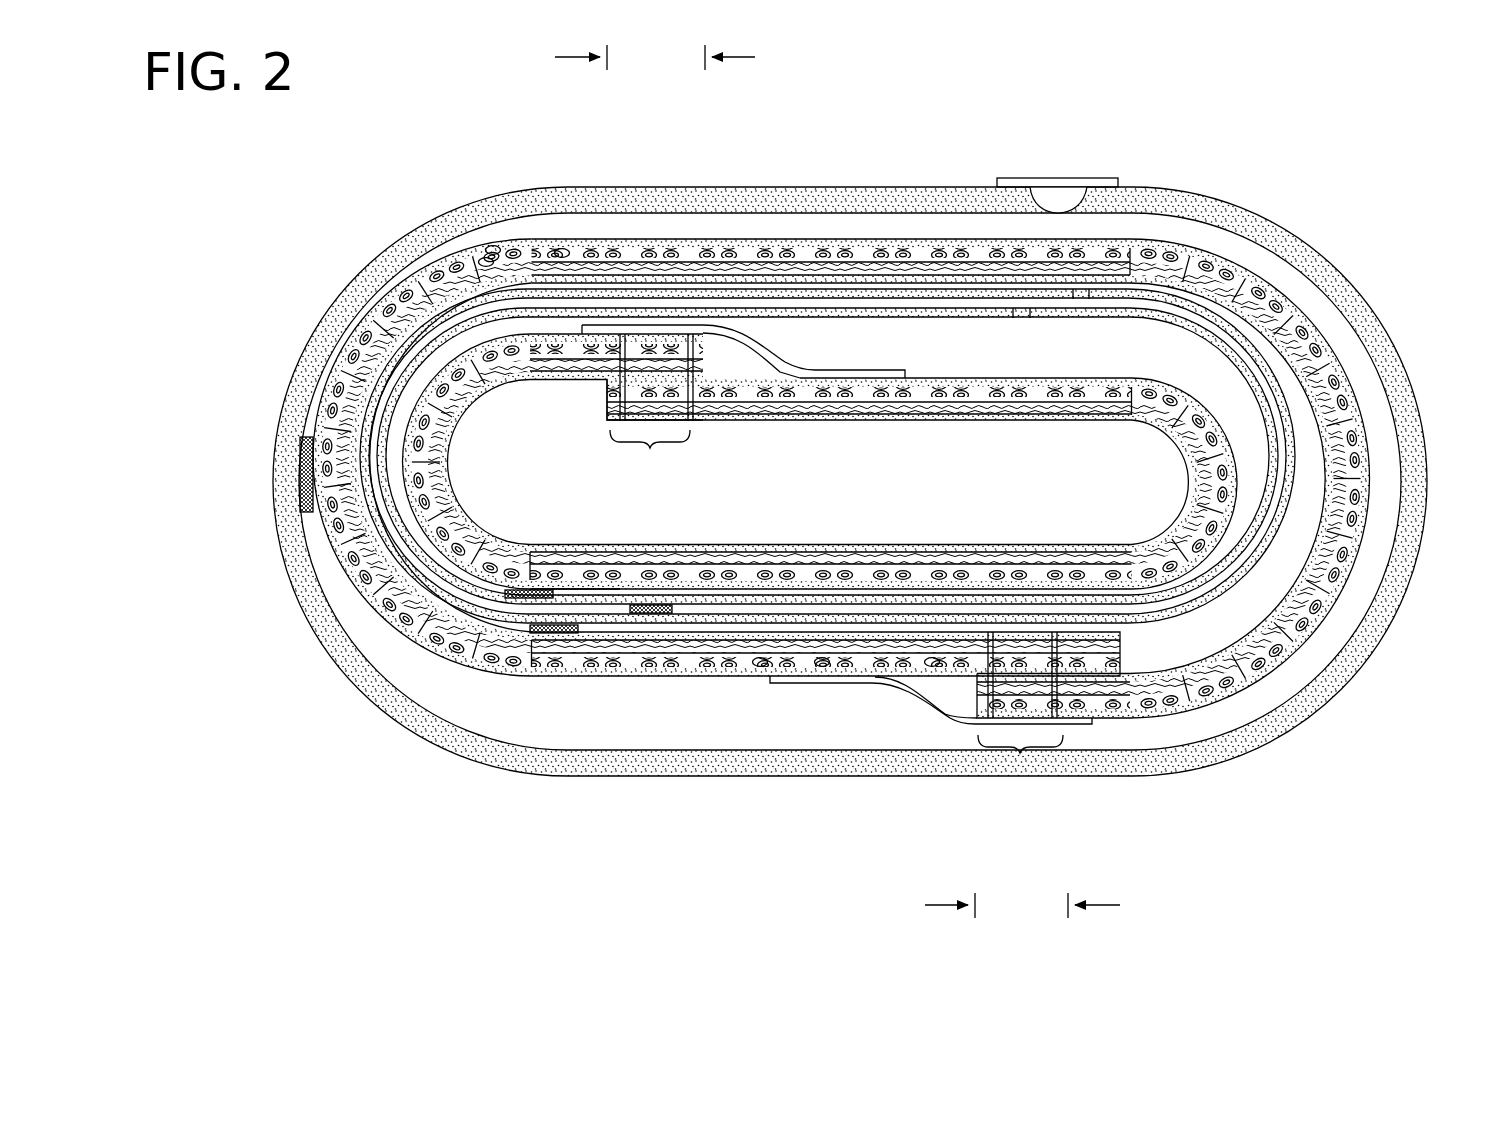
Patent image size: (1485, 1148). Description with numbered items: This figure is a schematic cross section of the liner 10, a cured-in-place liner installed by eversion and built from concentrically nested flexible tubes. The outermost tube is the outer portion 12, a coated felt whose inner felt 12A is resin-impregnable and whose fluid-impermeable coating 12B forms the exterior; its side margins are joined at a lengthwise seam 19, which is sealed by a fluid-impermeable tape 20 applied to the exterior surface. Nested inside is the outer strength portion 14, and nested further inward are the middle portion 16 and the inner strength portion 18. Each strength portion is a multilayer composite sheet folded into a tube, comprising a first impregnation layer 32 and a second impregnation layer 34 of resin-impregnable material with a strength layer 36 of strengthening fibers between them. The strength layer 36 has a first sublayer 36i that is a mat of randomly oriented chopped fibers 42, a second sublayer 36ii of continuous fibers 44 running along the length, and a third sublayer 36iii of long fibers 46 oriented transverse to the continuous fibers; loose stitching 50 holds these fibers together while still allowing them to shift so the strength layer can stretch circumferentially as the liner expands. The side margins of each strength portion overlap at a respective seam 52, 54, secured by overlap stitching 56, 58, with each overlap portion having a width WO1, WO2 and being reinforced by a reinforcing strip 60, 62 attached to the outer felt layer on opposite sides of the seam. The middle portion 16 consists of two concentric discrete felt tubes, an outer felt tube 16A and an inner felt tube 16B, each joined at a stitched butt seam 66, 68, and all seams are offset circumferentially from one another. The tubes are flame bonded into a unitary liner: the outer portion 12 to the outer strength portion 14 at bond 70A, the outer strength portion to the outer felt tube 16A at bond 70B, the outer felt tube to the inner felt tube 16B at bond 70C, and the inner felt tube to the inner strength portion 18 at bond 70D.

The liner 10 is at (375, 868).
The outer portion 12 is at (801, 506).
The felt 12A is at (785, 760).
The fluid-impermeable coating 12B is at (725, 776).
The outer strength portion 14 is at (826, 458).
The middle portion 16 is at (820, 365).
The outer felt tube 16A is at (618, 290).
The inner felt tube 16B is at (575, 598).
The inner strength portion 18 is at (756, 571).
The seam 19 is at (1075, 200).
The fluid-impermeable tape 20 is at (1020, 182).
The first impregnation layer 32 is at (773, 265).
The second impregnation layer 34 is at (733, 263).
The strength layer 36 is at (690, 256).
The first sublayer 36i is at (562, 248).
The second sublayer 36ii is at (485, 258).
The third sublayer 36iii is at (493, 245).
The randomly oriented chopped fibers 42 is at (873, 257).
The continuous fibers 44 is at (940, 252).
The long fibers 46 is at (830, 272).
The stitching 50 is at (385, 290).
The seam 52 is at (1020, 755).
The seam 54 is at (650, 460).
The overlap stitching 56 is at (988, 650).
The overlap stitching 58 is at (607, 402).
The reinforcing strip 60 is at (870, 690).
The reinforcing strip 62 is at (735, 340).
The seam 66 is at (1088, 300).
The seam 68 is at (1022, 318).
The bond 70A is at (300, 455).
The bond 70B is at (555, 634).
The bond 70C is at (660, 613).
The bond 70D is at (505, 597).
The width WO1 is at (1022, 909).
The width WO2 is at (655, 59).